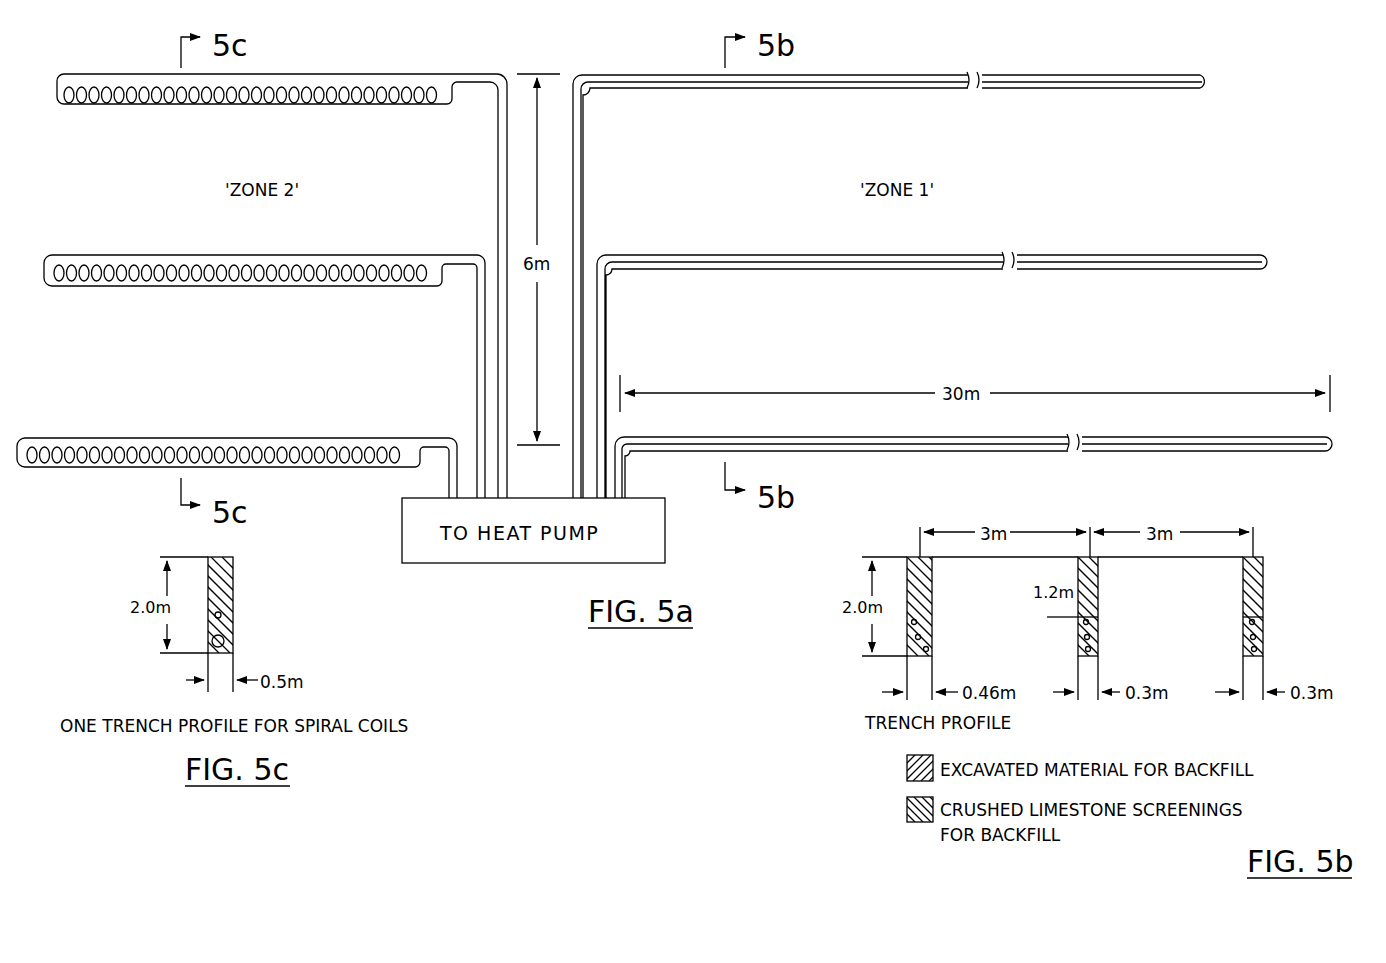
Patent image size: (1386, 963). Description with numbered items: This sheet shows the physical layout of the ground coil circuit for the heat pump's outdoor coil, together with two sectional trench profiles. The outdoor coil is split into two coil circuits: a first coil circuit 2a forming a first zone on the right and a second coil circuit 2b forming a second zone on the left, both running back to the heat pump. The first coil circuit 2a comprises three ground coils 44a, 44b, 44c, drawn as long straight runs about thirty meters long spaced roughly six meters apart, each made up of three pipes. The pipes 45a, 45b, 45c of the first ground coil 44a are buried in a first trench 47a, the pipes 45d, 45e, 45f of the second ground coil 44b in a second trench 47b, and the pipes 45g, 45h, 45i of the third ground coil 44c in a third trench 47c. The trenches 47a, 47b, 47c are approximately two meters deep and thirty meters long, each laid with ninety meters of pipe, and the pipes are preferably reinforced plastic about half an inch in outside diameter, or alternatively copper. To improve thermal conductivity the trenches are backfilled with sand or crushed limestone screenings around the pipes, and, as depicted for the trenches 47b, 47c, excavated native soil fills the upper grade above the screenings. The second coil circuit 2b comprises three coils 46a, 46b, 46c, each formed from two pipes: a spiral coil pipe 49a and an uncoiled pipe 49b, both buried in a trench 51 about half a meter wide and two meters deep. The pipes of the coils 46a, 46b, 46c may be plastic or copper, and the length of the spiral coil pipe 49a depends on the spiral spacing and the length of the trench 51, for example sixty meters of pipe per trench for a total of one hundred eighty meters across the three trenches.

In FIG. 5a, the first coil circuit 2a is at (1052, 142).
In FIG. 5a, the second coil circuit 2b is at (165, 337).
In FIG. 5a, the ground coil 44a is at (1113, 62).
In FIG. 5a, the ground coil 44b is at (1098, 238).
In FIG. 5a, the ground coil 44c is at (1112, 430).
In FIG. 5a, the coil 46a is at (446, 58).
In FIG. 5a, the coil 46b is at (386, 248).
In FIG. 5a, the coil 46c is at (368, 423).
In FIG. 5a, the spiral coil pipe 49a is at (392, 104).
In FIG. 5c, the spiral coil pipe 49a is at (226, 641).
In FIG. 5a, the uncoiled pipe 49b is at (352, 74).
In FIG. 5c, the uncoiled pipe 49b is at (224, 613).
In FIG. 5c, the trench 51 is at (228, 558).
In FIG. 5b, the trench 47a is at (934, 600).
In FIG. 5b, the trench 47b is at (1099, 602).
In FIG. 5b, the trench 47c is at (1264, 600).
In FIG. 5b, the pipe 45a is at (917, 622).
In FIG. 5b, the pipe 45b is at (921, 637).
In FIG. 5b, the pipe 45c is at (929, 650).
In FIG. 5b, the pipe 45d is at (1089, 622).
In FIG. 5b, the pipe 45e is at (1090, 637).
In FIG. 5b, the pipe 45f is at (1091, 651).
In FIG. 5b, the pipe 45g is at (1255, 622).
In FIG. 5b, the pipe 45h is at (1256, 637).
In FIG. 5b, the pipe 45i is at (1257, 652).